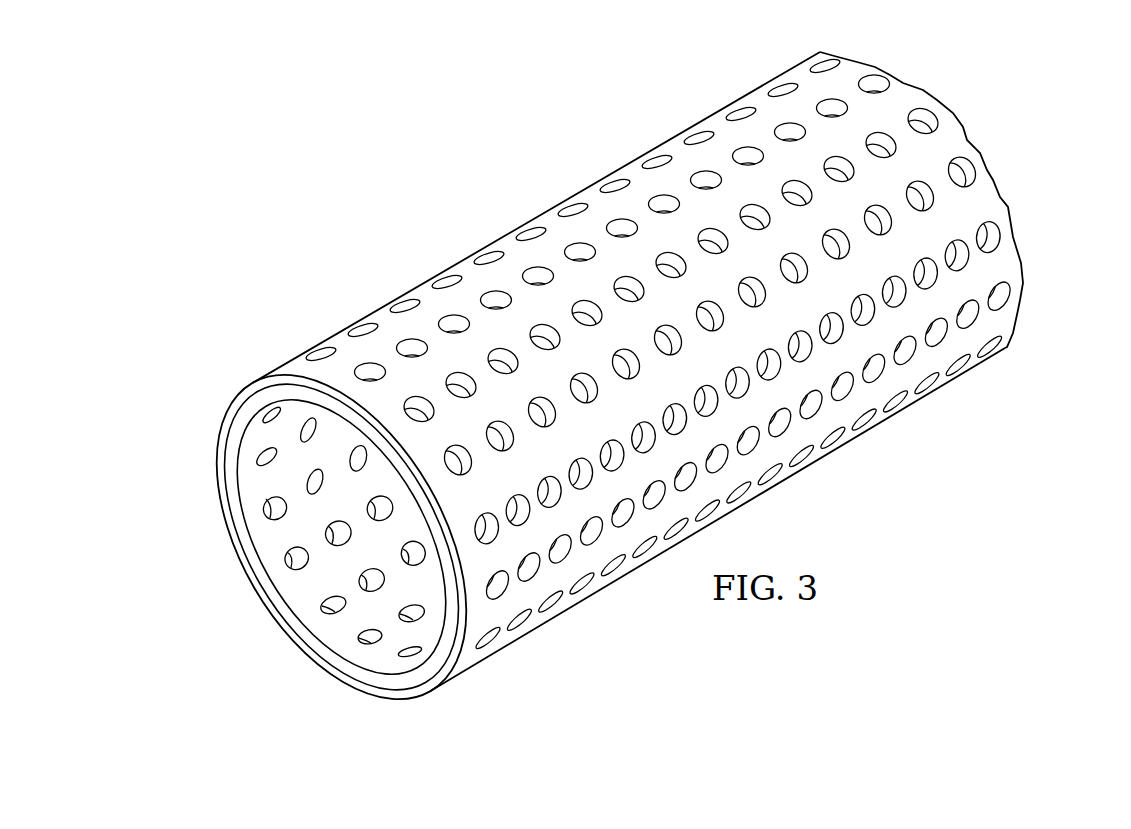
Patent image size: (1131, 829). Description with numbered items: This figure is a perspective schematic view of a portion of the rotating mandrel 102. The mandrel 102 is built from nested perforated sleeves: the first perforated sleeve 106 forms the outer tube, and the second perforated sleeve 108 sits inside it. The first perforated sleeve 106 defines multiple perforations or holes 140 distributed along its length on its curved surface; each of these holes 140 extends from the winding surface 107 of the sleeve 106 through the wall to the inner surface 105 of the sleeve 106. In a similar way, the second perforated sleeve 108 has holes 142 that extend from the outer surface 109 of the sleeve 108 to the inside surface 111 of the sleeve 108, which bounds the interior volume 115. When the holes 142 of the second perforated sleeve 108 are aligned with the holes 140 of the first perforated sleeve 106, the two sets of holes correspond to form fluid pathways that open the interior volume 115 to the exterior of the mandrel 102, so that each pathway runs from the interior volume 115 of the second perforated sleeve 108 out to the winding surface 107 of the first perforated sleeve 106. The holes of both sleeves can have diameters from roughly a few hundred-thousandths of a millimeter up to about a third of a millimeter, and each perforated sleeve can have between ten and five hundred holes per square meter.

The rotating mandrel 102 is at (617, 413).
The inner surface 105 is at (380, 695).
The first perforated sleeve 106 is at (638, 371).
The winding surface 107 is at (570, 197).
The second perforated sleeve 108 is at (250, 408).
The outer surface 109 is at (234, 538).
The inside surface 111 is at (335, 536).
The interior volume 115 is at (307, 536).
The holes 140 is at (700, 138).
The holes 142 is at (362, 635).